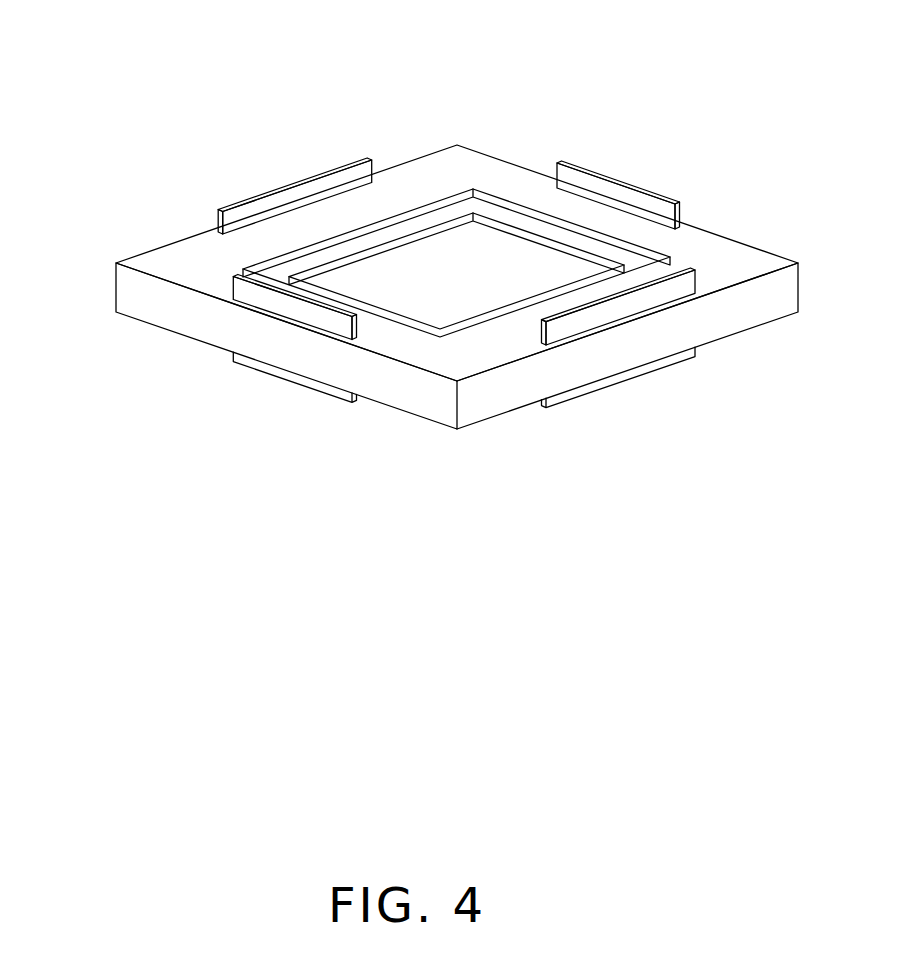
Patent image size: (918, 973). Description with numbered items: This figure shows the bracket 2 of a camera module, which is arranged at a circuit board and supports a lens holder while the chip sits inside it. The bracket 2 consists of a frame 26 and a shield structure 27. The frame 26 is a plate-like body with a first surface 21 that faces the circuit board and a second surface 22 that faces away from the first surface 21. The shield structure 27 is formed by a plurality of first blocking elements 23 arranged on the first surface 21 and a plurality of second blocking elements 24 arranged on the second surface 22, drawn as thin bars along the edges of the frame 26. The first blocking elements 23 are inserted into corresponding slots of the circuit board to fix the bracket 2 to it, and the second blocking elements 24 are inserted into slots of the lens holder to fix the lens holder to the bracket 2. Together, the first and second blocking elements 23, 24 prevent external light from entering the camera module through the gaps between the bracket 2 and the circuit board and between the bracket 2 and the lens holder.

The bracket 2 is at (521, 52).
The first surface 21 is at (432, 417).
The second surface 22 is at (192, 247).
The first blocking elements 23 is at (600, 383).
The second blocking elements 24 is at (630, 303).
The frame 26 is at (207, 318).
The shield structure 27 is at (727, 423).